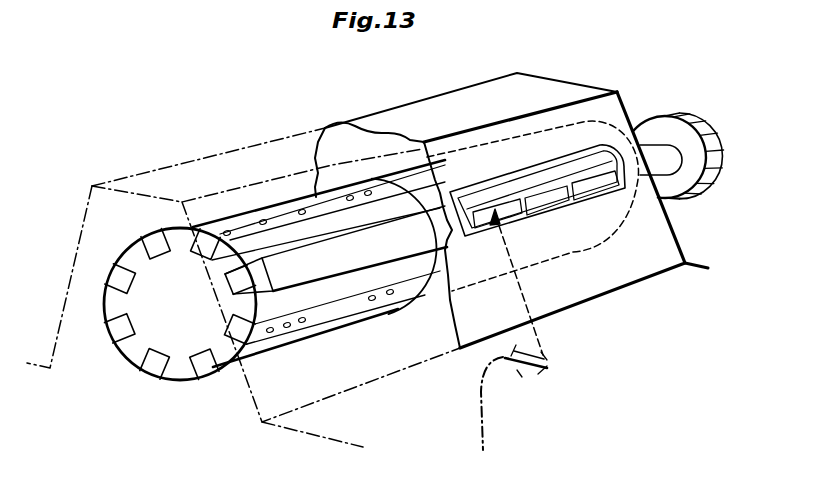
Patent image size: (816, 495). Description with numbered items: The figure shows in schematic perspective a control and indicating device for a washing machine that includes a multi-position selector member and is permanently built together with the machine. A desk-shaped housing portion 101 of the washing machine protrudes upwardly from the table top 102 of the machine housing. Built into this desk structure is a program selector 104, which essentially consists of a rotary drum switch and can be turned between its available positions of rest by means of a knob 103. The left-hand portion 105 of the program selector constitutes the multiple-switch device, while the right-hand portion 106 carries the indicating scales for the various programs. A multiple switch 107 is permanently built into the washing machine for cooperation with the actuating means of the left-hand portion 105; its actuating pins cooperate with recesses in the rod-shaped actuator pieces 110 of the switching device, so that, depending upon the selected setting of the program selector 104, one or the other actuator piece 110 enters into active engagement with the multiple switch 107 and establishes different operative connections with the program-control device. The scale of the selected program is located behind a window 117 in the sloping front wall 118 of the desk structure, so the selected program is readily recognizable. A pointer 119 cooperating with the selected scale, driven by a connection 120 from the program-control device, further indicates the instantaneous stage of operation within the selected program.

The desk-shaped housing portion 101 is at (393, 118).
The table top 102 is at (687, 280).
The knob 103 is at (671, 112).
The program selector 104 is at (182, 293).
The left-hand portion of the program selector 105 is at (288, 240).
The right-hand portion of the program selector 106 is at (462, 172).
The multiple switch 107 is at (343, 255).
The rod-shaped actuator pieces 110 is at (115, 327).
The window 117 is at (522, 173).
The sloping front wall 118 is at (600, 108).
The pointer 119 is at (523, 290).
The connection 120 is at (483, 420).